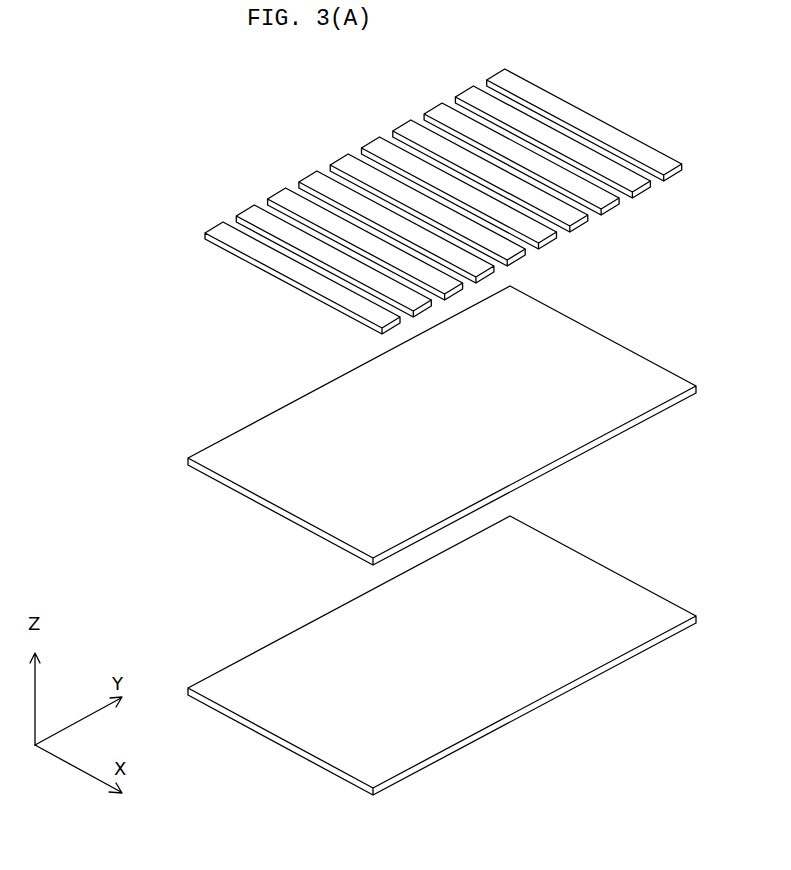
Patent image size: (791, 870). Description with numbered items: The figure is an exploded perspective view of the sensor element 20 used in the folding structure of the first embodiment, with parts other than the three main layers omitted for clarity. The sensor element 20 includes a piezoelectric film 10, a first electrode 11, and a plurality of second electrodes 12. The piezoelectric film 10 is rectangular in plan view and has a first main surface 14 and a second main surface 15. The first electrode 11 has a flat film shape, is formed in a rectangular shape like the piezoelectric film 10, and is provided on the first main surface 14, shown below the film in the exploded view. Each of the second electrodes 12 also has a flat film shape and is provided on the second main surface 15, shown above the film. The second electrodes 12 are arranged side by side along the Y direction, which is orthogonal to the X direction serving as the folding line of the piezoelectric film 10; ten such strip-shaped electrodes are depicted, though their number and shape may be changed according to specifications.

The sensor element 20 is at (440, 201).
The second electrodes 12 is at (612, 213).
The second main surface 15 is at (301, 412).
The first main surface 14 is at (568, 420).
The piezoelectric film 10 is at (442, 425).
The first electrode 11 is at (625, 655).